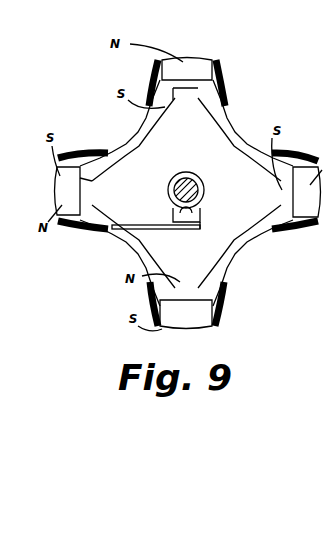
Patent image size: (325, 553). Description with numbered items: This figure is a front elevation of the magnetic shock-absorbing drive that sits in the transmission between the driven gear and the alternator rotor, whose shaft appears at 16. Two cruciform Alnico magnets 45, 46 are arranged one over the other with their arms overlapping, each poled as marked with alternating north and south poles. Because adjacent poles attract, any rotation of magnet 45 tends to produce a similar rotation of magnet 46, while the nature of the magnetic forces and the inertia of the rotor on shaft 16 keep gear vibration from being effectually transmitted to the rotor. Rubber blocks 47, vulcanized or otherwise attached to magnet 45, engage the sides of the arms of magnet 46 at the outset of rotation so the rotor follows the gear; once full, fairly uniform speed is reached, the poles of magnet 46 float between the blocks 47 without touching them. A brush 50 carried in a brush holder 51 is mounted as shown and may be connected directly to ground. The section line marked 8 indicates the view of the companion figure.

The section line 8- 8 is at (253, 327).
The shaft 16 is at (199, 203).
The cruciform magnet 45 is at (150, 123).
The cruciform magnet 46 is at (143, 160).
The rubber blocks 47 is at (152, 68).
The brush 50 is at (100, 231).
The brush holder 51 is at (143, 238).